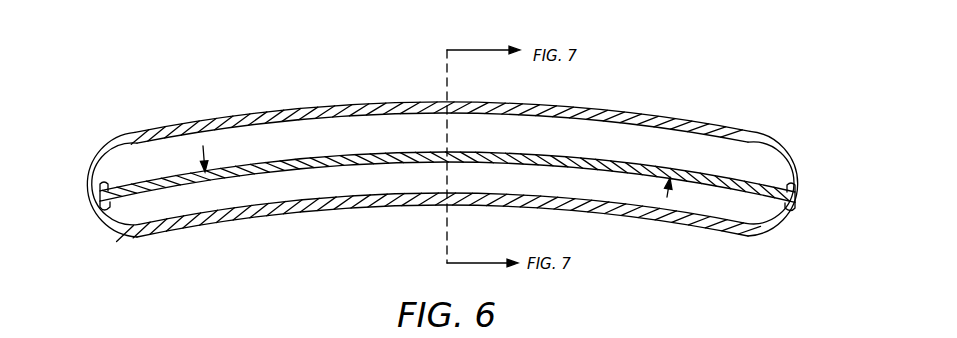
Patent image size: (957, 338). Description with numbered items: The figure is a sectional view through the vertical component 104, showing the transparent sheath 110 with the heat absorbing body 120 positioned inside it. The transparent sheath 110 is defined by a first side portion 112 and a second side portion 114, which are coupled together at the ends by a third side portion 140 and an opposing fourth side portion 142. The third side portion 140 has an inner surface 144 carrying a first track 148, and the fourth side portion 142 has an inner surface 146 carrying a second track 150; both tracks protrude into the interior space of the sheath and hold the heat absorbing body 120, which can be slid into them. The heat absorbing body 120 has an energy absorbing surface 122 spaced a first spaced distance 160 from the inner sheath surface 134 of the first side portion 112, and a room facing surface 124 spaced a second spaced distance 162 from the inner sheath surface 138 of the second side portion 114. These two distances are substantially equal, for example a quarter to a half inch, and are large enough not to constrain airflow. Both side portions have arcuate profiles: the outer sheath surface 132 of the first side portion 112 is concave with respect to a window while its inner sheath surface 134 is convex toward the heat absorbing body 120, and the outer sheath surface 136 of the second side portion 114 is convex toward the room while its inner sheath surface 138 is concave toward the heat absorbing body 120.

The vertical component 104 is at (134, 85).
The transparent sheath 110 is at (732, 120).
The first side portion 112 is at (628, 226).
The second side portion 114 is at (304, 103).
The heat absorbing body 120 is at (315, 181).
The energy absorbing surface 122 is at (393, 166).
The room facing surface 124 is at (402, 152).
The outer sheath surface 132 is at (540, 208).
The inner sheath surface 134 is at (546, 196).
The outer sheath surface 136 is at (604, 108).
The inner sheath surface 138 is at (597, 120).
The third side portion 140 is at (89, 214).
The fourth side portion 142 is at (812, 189).
The inner surface 144 is at (107, 163).
The inner surface 146 is at (773, 218).
The first track 148 is at (85, 185).
The second track 150 is at (803, 208).
The first spaced distance 160 is at (209, 230).
The second spaced distance 162 is at (683, 112).